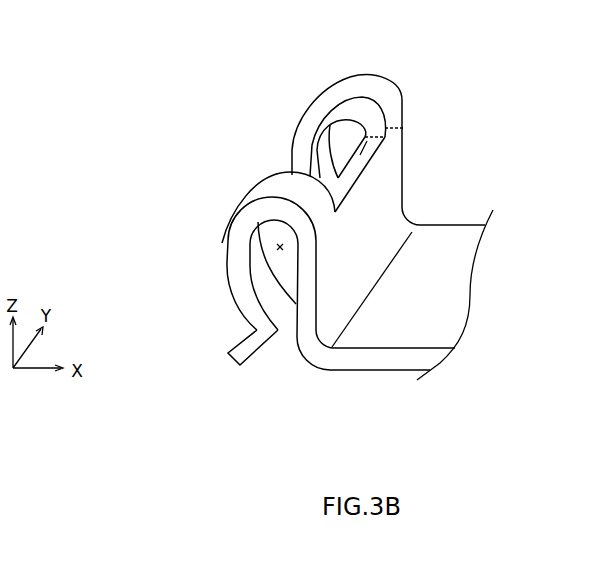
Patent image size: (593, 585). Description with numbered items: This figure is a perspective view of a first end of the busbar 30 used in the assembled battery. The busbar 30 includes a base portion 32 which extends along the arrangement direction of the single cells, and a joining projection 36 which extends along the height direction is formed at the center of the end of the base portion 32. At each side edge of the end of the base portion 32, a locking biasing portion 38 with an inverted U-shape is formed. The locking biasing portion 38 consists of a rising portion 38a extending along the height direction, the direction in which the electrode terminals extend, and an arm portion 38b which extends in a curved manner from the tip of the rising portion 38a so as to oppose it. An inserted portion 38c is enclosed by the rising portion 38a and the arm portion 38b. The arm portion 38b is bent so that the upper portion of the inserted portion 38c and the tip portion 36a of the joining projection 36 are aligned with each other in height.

The busbar 30 is at (137, 64).
The base portion 32 is at (388, 360).
The joining projection 36 is at (382, 203).
The tip portion 36a is at (403, 128).
The locking biasing portion 38 is at (297, 211).
The rising portion 38a is at (307, 298).
The arm portion 38b is at (233, 240).
The inserted portion 38c is at (280, 253).